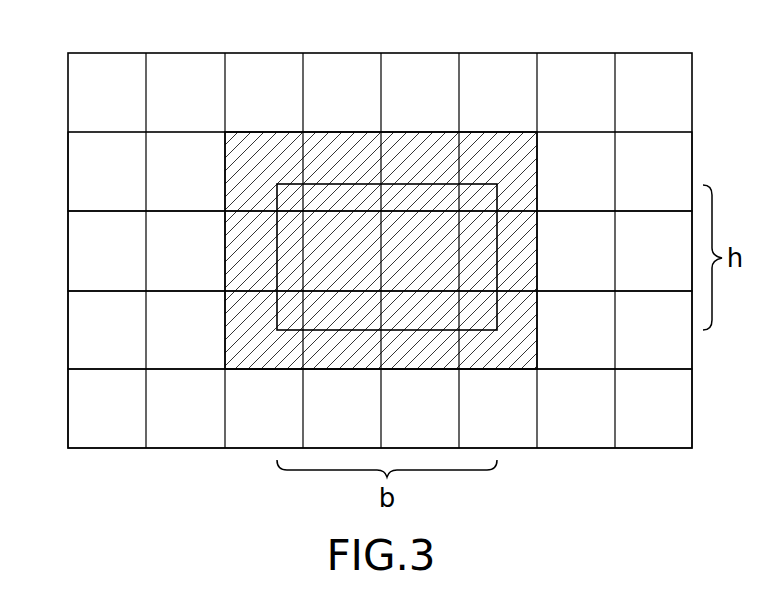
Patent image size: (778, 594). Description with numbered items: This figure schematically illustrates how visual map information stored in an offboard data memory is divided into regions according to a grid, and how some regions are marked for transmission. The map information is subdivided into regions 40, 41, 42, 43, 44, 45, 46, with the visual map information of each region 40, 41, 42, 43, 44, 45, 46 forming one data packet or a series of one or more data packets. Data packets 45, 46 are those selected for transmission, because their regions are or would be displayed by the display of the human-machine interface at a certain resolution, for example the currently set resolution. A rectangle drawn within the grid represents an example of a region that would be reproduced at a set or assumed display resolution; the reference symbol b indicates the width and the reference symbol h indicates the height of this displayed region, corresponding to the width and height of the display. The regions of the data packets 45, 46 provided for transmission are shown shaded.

The region 40 is at (113, 98).
The region 41 is at (107, 182).
The region 42 is at (107, 262).
The region 43 is at (106, 334).
The region 44 is at (116, 422).
The data packet 45 is at (268, 140).
The data packet 46 is at (351, 147).